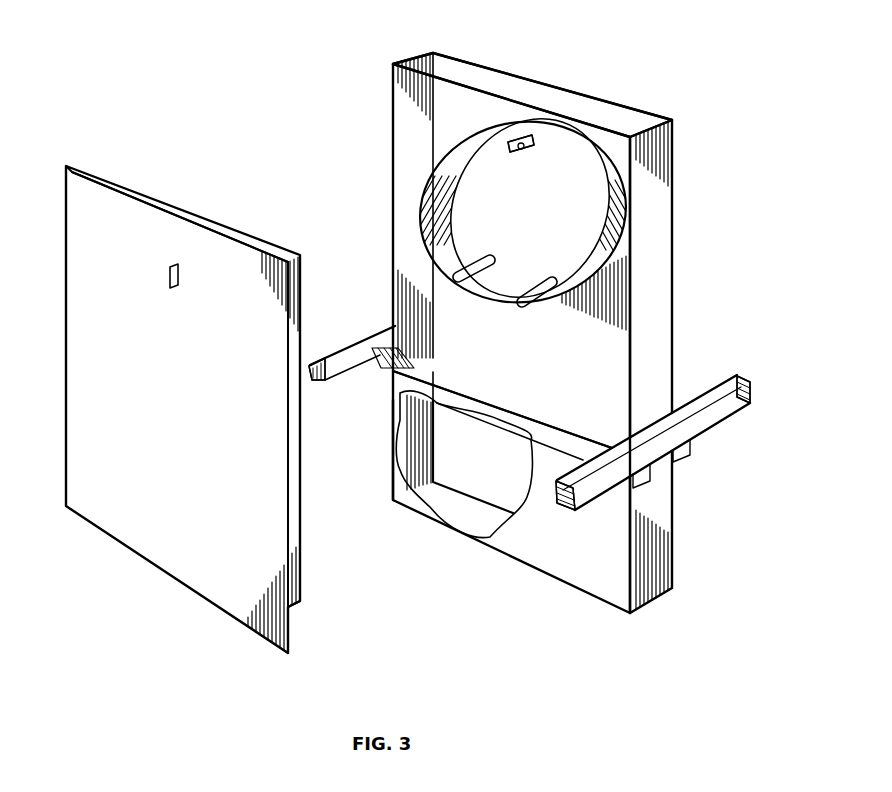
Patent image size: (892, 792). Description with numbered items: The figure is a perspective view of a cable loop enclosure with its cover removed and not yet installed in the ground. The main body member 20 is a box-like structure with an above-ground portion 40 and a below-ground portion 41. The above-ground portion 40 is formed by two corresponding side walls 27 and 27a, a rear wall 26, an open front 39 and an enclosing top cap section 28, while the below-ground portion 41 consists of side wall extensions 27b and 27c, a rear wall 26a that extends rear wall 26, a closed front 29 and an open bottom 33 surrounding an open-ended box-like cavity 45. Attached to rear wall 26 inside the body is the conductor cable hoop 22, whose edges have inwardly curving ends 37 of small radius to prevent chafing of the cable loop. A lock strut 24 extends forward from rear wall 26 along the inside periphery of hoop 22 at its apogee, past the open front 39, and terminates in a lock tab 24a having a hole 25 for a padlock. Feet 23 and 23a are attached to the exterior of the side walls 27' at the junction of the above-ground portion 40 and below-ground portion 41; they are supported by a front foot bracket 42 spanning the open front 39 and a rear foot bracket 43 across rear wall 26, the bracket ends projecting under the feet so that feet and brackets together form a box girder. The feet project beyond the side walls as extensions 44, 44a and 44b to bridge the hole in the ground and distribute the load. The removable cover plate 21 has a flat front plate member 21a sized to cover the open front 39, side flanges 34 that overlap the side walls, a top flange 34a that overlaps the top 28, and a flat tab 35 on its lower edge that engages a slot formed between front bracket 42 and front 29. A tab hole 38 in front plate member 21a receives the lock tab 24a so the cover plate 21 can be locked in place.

The main body member 20 is at (383, 112).
The cover plate 21 is at (88, 160).
The front plate member 21a is at (172, 487).
The conductor cable hoop 22 is at (453, 240).
The foot 23 is at (377, 340).
The foot 23a is at (672, 458).
The lock strut 24 is at (528, 146).
The lock tab 24a is at (511, 152).
The hole 25 is at (519, 153).
The rear wall 26 is at (510, 376).
The rear wall 26a is at (487, 458).
The side wall 27 is at (680, 375).
The side walls 27' is at (546, 147).
The side wall 27a is at (407, 224).
The side wall extension 27b is at (410, 412).
The side wall extension 27c is at (657, 513).
The top cap section 28 is at (540, 90).
The closed front 29 is at (587, 561).
The open bottom 33 is at (413, 493).
The side flanges 34 is at (293, 463).
The top flange 34a is at (133, 192).
The flat tab 35 is at (290, 630).
The inwardly curving ends 37 is at (471, 286).
The tab hole 38 is at (168, 270).
The open front 39 is at (455, 320).
The above-ground portion 40 is at (680, 263).
The below-ground portion 41 is at (710, 535).
The front foot bracket 42 is at (565, 437).
The rear foot bracket 43 is at (693, 445).
The foot extension 44 is at (317, 378).
The foot extension 44a is at (567, 502).
The foot extension 44b is at (737, 378).
The box-like cavity 45 is at (503, 483).